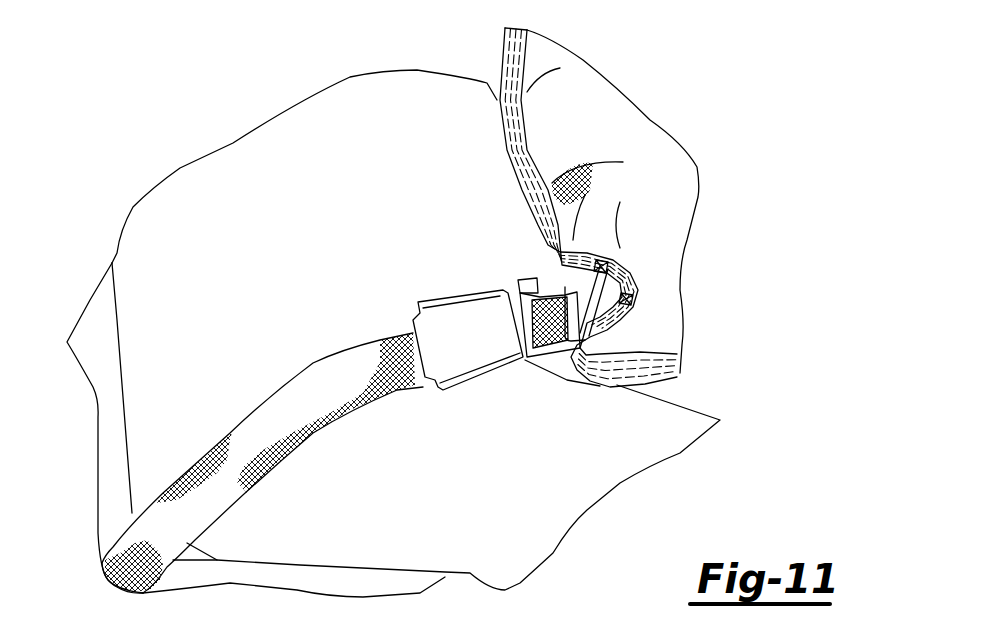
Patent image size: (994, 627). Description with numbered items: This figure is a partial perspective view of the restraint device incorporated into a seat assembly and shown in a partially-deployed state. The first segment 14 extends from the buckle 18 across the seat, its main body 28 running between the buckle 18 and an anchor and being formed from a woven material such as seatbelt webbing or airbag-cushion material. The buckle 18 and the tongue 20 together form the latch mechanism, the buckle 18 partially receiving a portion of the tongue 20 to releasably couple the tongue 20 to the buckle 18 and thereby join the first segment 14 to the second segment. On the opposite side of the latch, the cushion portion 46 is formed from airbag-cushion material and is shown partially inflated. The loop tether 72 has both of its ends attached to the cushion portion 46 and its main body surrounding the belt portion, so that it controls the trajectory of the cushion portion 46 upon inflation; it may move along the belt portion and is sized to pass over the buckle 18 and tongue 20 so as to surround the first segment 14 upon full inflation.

The first segment 14 is at (360, 310).
The buckle 18 is at (433, 323).
The tongue 20 is at (527, 282).
The main body 28 is at (226, 490).
The cushion portion 46 is at (605, 150).
The loop tether 72 is at (615, 335).